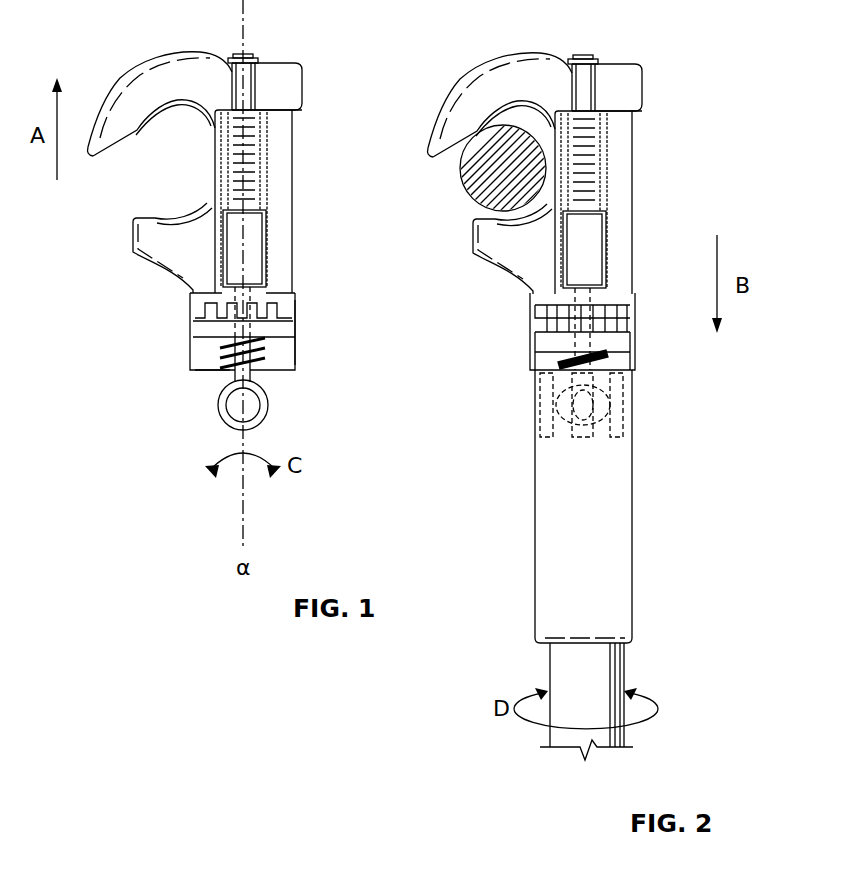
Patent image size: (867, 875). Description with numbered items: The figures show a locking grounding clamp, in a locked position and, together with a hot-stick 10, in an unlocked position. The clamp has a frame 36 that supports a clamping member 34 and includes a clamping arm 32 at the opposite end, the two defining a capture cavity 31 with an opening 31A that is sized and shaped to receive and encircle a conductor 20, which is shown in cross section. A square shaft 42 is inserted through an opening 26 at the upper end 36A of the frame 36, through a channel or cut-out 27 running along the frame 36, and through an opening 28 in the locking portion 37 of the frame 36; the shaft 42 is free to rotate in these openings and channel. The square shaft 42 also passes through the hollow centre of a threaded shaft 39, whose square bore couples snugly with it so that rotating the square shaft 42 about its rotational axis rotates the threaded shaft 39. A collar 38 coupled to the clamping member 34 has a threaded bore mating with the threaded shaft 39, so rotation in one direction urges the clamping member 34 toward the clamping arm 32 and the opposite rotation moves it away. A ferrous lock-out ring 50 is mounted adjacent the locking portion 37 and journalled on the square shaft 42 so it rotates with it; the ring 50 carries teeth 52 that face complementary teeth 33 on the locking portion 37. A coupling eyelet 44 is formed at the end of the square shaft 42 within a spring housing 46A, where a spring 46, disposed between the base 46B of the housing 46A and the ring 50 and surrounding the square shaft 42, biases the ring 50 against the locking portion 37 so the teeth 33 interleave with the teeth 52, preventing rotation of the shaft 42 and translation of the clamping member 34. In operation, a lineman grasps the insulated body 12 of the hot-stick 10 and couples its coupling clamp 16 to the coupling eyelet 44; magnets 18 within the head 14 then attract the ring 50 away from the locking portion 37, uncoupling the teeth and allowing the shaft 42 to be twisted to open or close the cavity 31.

In FIG. 2, the hot-stick 10 is at (660, 561).
In FIG. 2, the insulated body 12 is at (598, 665).
In FIG. 2, the head 14 is at (655, 498).
In FIG. 2, the coupling clamp 16 is at (632, 475).
In FIG. 2, the plurality of magnets 18 is at (620, 415).
In FIG. 2, the conductor 20 is at (478, 206).
In FIG. 1, the opening 26 is at (255, 80).
In FIG. 1, the channel or cut-out 27 is at (262, 160).
In FIG. 1, the opening 28 is at (250, 295).
In FIG. 1, the capture cavity 31 is at (186, 172).
In FIG. 1, the opening 31A is at (110, 188).
In FIG. 1, the clamping member (clamping arm) 32 is at (125, 72).
In FIG. 1, the plurality of teeth 33 is at (227, 310).
In FIG. 1, the clamping member 34 is at (157, 262).
In FIG. 1, the frame 36 is at (288, 193).
In FIG. 1, the upper end 36A is at (288, 96).
In FIG. 1, the locking portion 37 is at (283, 299).
In FIG. 1, the collar 38 is at (248, 252).
In FIG. 1, the threaded shaft 39 is at (255, 138).
In FIG. 1, the square shaft 42 is at (255, 370).
In FIG. 1, the coupling eye (coupling eyelet) 44 is at (268, 398).
In FIG. 1, the spring 46 is at (215, 362).
In FIG. 1, the spring housing 46A is at (296, 350).
In FIG. 1, the base 46B is at (200, 372).
In FIG. 1, the lock-out ring 50 is at (218, 350).
In FIG. 2, the lock-out ring 50 is at (633, 345).
In FIG. 1, the plurality of teeth 52 is at (252, 316).